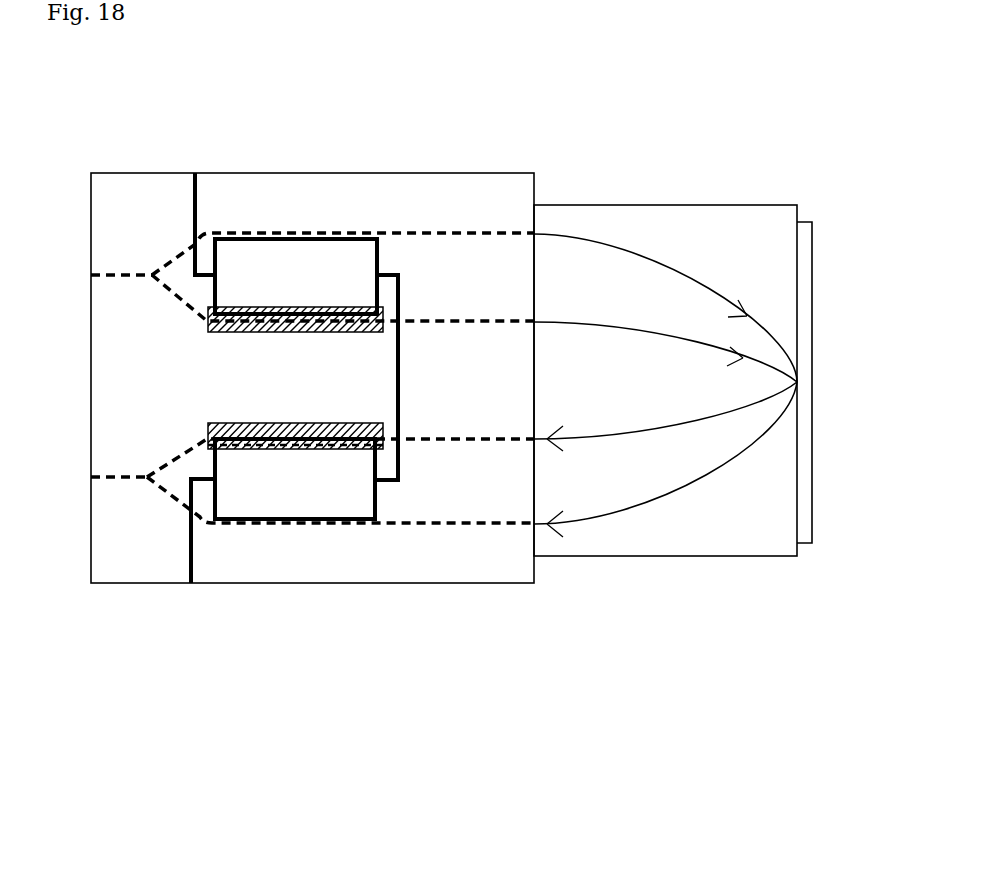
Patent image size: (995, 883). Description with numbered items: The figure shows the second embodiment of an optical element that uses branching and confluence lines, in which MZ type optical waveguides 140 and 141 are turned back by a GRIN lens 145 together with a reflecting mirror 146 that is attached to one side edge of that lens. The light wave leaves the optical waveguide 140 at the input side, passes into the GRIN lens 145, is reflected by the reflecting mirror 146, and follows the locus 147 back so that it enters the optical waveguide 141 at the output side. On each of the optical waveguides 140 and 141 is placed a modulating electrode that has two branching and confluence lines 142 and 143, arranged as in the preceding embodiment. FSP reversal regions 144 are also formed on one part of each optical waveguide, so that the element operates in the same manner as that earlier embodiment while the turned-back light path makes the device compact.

The optical waveguide 140 is at (125, 275).
The optical waveguide 141 is at (118, 478).
The branching and confluence line 142 is at (352, 222).
The branching and confluence line 143 is at (341, 534).
The FSP reversal region 144 is at (207, 438).
The GRIN lens 145 is at (653, 205).
The reflecting mirror 146 is at (803, 484).
The locus 147 is at (647, 497).